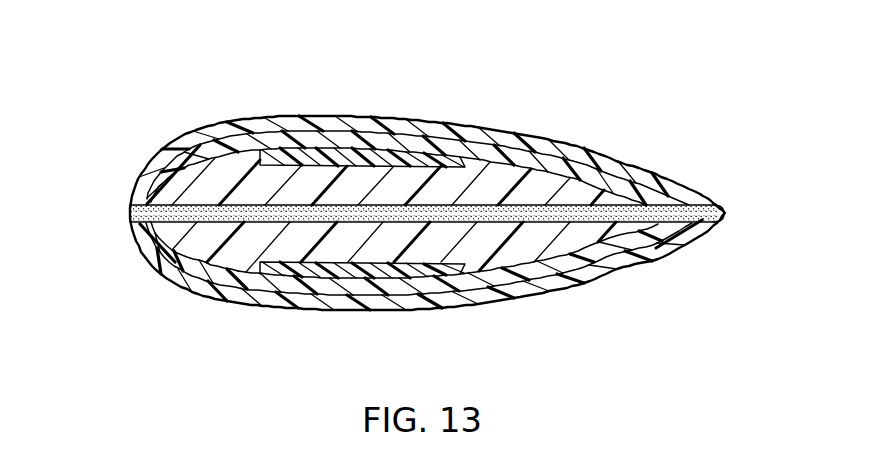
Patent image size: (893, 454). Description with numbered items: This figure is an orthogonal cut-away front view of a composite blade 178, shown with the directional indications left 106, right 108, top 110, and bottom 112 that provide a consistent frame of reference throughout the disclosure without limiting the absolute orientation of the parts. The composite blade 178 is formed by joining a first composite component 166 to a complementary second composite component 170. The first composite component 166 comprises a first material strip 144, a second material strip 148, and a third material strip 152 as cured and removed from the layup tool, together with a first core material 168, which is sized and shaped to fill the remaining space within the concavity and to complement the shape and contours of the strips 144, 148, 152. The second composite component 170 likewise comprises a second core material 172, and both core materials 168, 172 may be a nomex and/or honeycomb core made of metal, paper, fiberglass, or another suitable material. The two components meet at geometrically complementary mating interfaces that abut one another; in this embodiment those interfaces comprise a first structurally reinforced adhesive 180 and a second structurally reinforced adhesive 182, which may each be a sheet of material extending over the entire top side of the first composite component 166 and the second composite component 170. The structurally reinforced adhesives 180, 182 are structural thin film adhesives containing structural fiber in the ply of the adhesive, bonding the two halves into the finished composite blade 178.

The left 106 is at (751, 207).
The right 108 is at (99, 212).
The top 110 is at (421, 92).
The bottom 112 is at (460, 331).
The first material strip 144 is at (543, 140).
The second material strip 148 is at (647, 185).
The third material strip 152 is at (373, 155).
The first composite component 166 is at (123, 182).
The first core material 168 is at (582, 190).
The second composite component 170 is at (123, 244).
The second core material 172 is at (200, 252).
The composite blade 178 is at (474, 197).
The first structurally reinforced adhesive 180 is at (706, 203).
The second structurally reinforced adhesive 182 is at (714, 226).